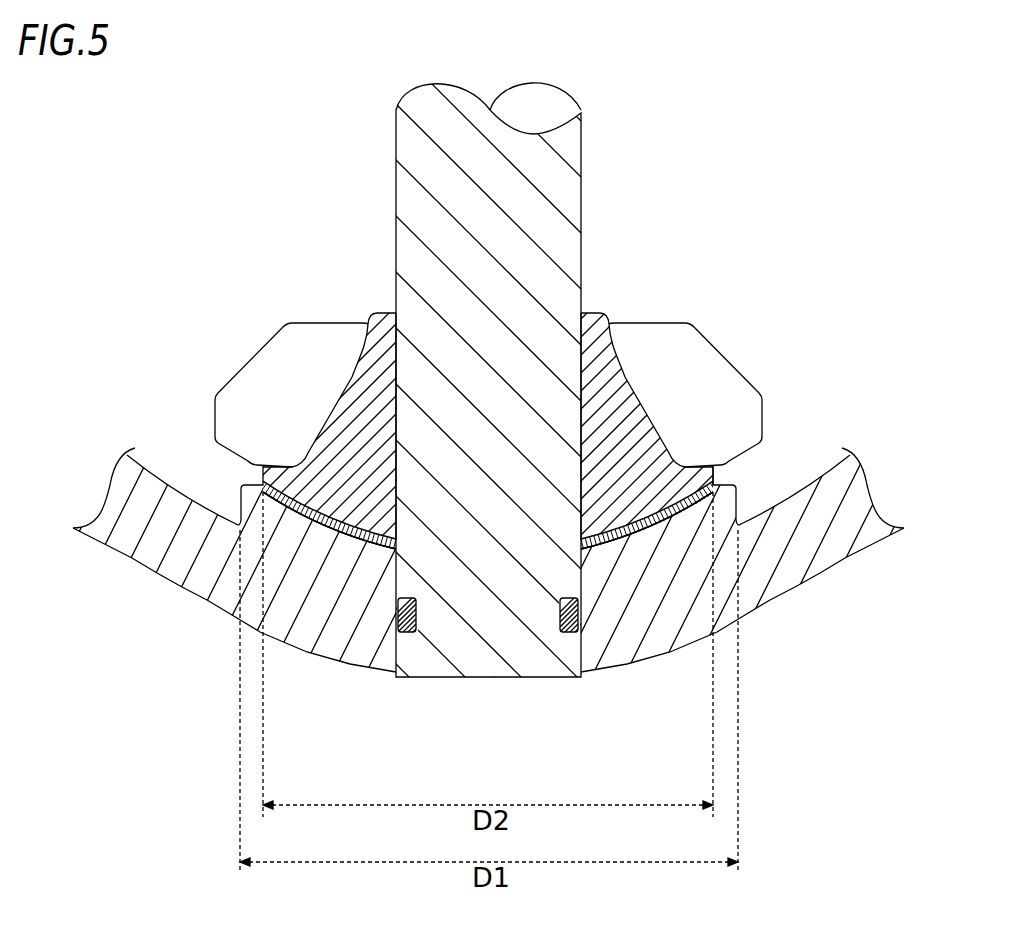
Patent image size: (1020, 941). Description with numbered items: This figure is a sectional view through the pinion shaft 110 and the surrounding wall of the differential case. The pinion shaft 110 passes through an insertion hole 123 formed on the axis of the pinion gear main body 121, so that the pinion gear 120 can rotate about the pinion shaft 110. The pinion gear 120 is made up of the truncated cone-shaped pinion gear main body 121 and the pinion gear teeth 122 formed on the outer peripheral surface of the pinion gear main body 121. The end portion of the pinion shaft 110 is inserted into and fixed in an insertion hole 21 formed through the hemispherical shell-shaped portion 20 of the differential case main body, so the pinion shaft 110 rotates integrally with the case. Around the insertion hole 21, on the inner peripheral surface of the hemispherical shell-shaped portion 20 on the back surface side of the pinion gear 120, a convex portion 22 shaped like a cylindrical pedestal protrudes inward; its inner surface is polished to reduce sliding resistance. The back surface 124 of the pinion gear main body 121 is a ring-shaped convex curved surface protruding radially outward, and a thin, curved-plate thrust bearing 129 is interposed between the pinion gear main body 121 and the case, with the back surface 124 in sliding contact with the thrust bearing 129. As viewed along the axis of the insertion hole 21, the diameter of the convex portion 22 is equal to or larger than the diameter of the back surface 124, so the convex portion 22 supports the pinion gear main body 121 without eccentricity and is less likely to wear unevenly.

The hemispherical shell-shaped portion 20 is at (510, 470).
The insertion hole 21 is at (578, 648).
The convex portion 22 is at (685, 527).
The pinion shaft 110 is at (583, 145).
The pinion gear 120 is at (510, 470).
The pinion gear main body 121 is at (588, 316).
The pinion gear teeth 122 is at (668, 350).
The insertion hole 123 is at (395, 355).
The back surface 124 is at (303, 505).
The thrust bearing 129 is at (350, 522).